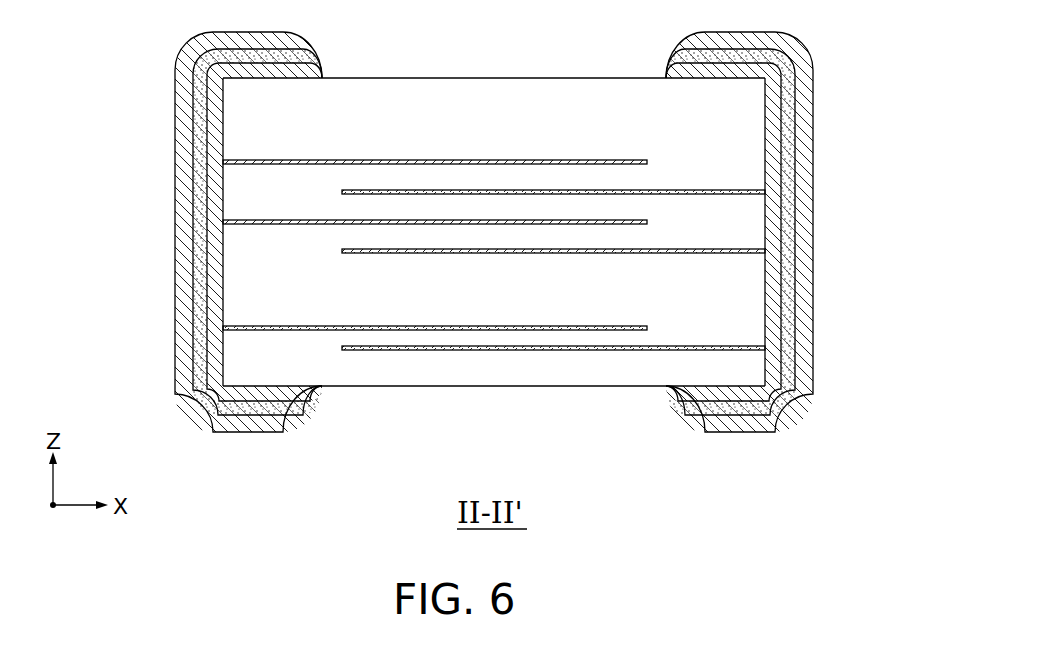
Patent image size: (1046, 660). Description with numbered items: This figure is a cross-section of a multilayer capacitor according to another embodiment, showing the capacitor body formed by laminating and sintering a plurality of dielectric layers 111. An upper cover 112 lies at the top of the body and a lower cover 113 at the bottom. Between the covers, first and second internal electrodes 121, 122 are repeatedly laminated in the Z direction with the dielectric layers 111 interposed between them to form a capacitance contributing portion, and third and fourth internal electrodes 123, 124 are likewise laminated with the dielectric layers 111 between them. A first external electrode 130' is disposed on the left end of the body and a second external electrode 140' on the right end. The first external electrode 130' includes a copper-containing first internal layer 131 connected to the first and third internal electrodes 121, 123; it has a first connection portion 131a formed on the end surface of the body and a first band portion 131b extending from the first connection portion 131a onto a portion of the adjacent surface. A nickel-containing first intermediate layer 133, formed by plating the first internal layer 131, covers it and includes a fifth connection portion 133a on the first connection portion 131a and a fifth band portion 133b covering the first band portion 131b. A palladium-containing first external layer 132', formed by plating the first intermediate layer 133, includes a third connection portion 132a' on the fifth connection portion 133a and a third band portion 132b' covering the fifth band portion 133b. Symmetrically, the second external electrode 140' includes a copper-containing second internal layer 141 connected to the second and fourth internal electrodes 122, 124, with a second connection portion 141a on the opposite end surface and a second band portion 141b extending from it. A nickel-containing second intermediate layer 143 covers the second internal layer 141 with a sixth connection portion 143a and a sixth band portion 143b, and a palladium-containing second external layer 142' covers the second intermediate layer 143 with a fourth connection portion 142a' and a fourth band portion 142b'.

The dielectric layer 111 is at (745, 172).
The upper cover 112 is at (507, 88).
The lower cover 113 is at (507, 372).
The first internal electrode 121 is at (447, 160).
The second internal electrode 122 is at (523, 190).
The third internal electrode 123 is at (442, 332).
The fourth internal electrode 124 is at (570, 350).
The first external electrode 130' is at (180, 230).
The first internal layer 131 is at (187, 232).
The first connection portion 131a is at (213, 293).
The first band portion 131b is at (266, 389).
The first external layer 132' is at (180, 227).
The third connection portion 132a' is at (144, 221).
The third band portion 132b' is at (209, 227).
The first intermediate layer 133 is at (185, 232).
The fifth connection portion 133a is at (200, 138).
The fifth band portion 133b is at (273, 57).
The second external electrode 140' is at (807, 230).
The second internal layer 141 is at (803, 232).
The second connection portion 141a is at (775, 293).
The second band portion 141b is at (722, 389).
The second external layer 142' is at (807, 227).
The fourth connection portion 142a' is at (842, 221).
The fourth band portion 142b' is at (778, 227).
The second intermediate layer 143 is at (803, 232).
The sixth connection portion 143a is at (788, 138).
The sixth band portion 143b is at (715, 57).